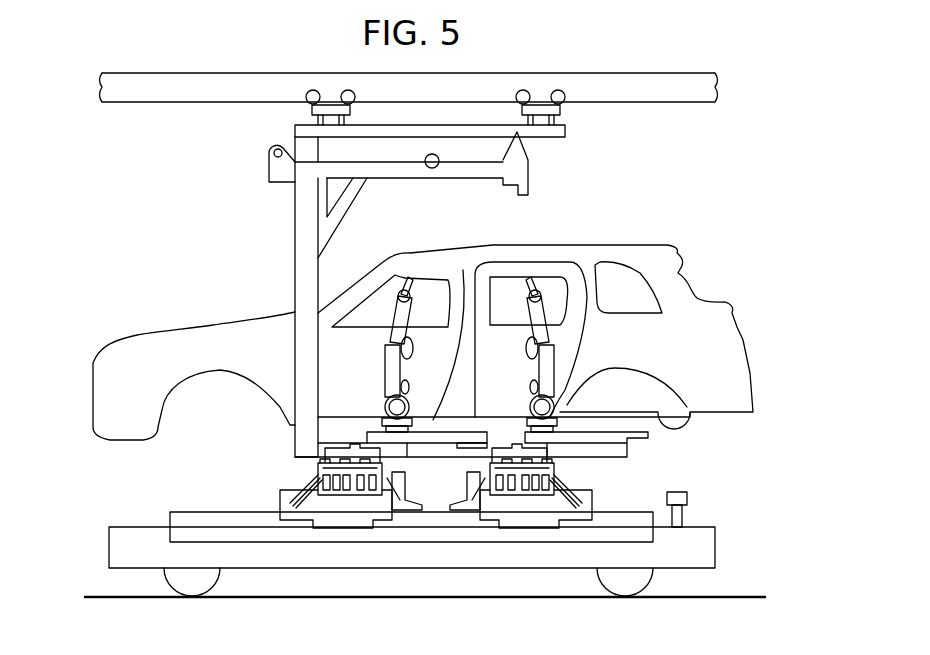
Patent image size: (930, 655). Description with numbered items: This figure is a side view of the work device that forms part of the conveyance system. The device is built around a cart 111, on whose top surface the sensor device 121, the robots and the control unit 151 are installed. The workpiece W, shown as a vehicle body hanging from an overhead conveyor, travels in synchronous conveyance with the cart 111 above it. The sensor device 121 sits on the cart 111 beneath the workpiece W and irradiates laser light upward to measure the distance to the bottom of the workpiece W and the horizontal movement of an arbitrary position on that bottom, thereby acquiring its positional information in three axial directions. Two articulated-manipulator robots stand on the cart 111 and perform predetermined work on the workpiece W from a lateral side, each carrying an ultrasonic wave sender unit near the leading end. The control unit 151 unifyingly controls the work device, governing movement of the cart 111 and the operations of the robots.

The cart 111 is at (109, 552).
The sensor device 121 is at (682, 495).
The control unit 151 is at (378, 492).
The workpiece W is at (730, 337).